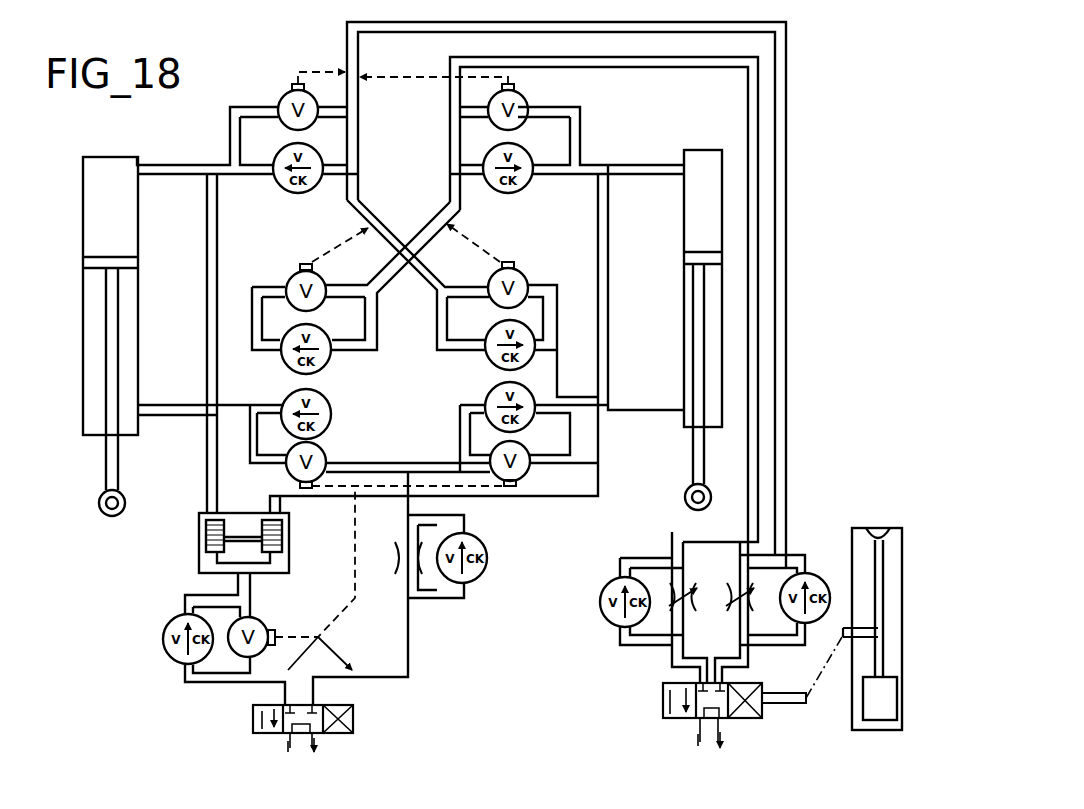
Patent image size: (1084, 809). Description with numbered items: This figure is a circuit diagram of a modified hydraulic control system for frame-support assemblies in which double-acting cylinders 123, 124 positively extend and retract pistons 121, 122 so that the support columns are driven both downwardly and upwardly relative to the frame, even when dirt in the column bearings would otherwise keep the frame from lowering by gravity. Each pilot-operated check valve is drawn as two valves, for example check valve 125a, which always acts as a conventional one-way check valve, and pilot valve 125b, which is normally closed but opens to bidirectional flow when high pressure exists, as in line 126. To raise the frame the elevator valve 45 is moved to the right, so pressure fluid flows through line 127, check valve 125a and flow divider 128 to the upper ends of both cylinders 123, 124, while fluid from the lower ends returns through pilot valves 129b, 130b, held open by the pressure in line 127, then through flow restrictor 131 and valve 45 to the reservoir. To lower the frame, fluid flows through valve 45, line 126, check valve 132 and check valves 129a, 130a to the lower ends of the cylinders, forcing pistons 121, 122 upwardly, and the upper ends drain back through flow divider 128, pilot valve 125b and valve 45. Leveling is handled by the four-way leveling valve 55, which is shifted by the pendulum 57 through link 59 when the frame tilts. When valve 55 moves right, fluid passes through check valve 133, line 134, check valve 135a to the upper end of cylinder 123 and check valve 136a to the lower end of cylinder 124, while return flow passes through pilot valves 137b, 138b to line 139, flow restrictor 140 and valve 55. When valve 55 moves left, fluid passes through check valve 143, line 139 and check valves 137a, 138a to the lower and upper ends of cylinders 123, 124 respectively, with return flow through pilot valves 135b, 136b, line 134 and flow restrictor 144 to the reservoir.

The elevator valve 45 is at (262, 705).
The leveling valve 55 is at (664, 683).
The pendulum 57 is at (880, 631).
The link 59 is at (843, 640).
The piston 121 is at (706, 474).
The piston 122 is at (104, 478).
The double-acting cylinder 123 is at (722, 150).
The double-acting cylinder 124 is at (137, 156).
The check valve 125a is at (163, 648).
The pilot valve 125b is at (268, 626).
The line 126 is at (410, 674).
The line 127 is at (180, 682).
The flow divider 128 is at (199, 551).
The check valve 129a is at (493, 394).
The pilot valve 129b is at (528, 483).
The check valve 130a is at (342, 397).
The pilot valve 130b is at (290, 488).
The flow restrictor 131 is at (437, 596).
The check valve 132 is at (488, 556).
The check valve 133 is at (614, 582).
The line 134 is at (686, 74).
The check valve 135a is at (540, 206).
The pilot valve 135b is at (516, 84).
The check valve 136a is at (335, 363).
The pilot valve 136b is at (300, 266).
The check valve 137a is at (482, 352).
The pilot valve 137b is at (516, 266).
The check valve 138a is at (317, 188).
The pilot valve 138b is at (295, 84).
The line 139 is at (447, 38).
The flow restrictor 140 is at (728, 592).
The check valve 143 is at (812, 626).
The flow restrictor 144 is at (698, 605).